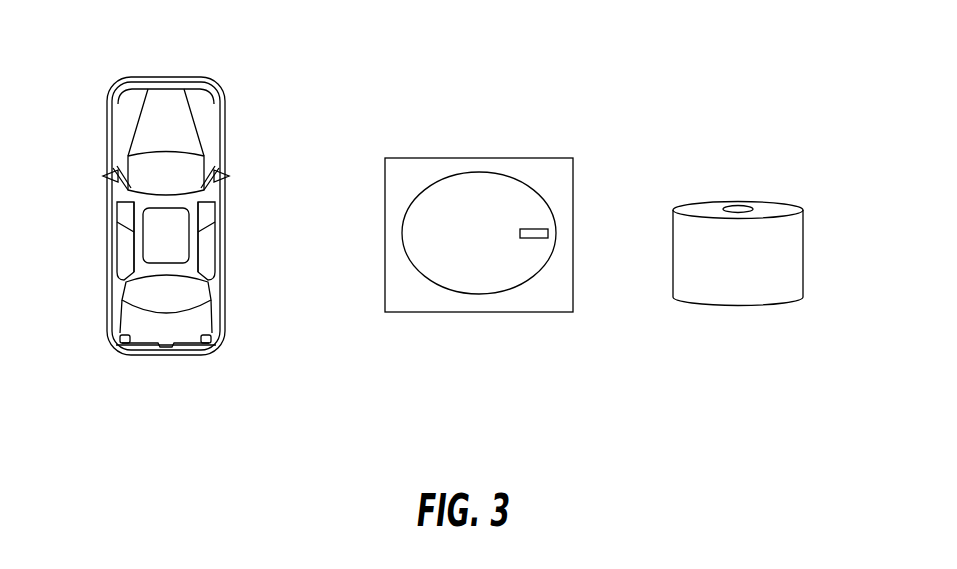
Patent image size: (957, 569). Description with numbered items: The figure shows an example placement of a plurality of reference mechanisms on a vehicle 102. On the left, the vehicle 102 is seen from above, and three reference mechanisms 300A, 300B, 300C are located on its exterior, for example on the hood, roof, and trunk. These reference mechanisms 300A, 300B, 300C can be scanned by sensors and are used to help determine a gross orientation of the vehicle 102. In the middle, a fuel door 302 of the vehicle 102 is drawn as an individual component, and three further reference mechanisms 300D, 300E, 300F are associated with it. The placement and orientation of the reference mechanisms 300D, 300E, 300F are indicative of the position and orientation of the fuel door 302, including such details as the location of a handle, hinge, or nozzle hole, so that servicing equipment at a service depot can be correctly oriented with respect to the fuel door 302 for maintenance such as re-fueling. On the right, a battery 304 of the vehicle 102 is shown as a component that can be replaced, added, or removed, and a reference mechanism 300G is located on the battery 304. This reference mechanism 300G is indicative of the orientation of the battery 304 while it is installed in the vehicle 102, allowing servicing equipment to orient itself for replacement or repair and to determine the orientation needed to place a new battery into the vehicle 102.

The vehicle 102 is at (144, 381).
The reference mechanism 300A is at (170, 96).
The reference mechanism 300B is at (171, 198).
The reference mechanism 300C is at (171, 333).
The reference mechanism 300D is at (416, 174).
The reference mechanism 300E is at (548, 174).
The reference mechanism 300F is at (549, 287).
The reference mechanism 300G is at (748, 251).
The fuel door 302 is at (516, 277).
The battery 304 is at (758, 287).